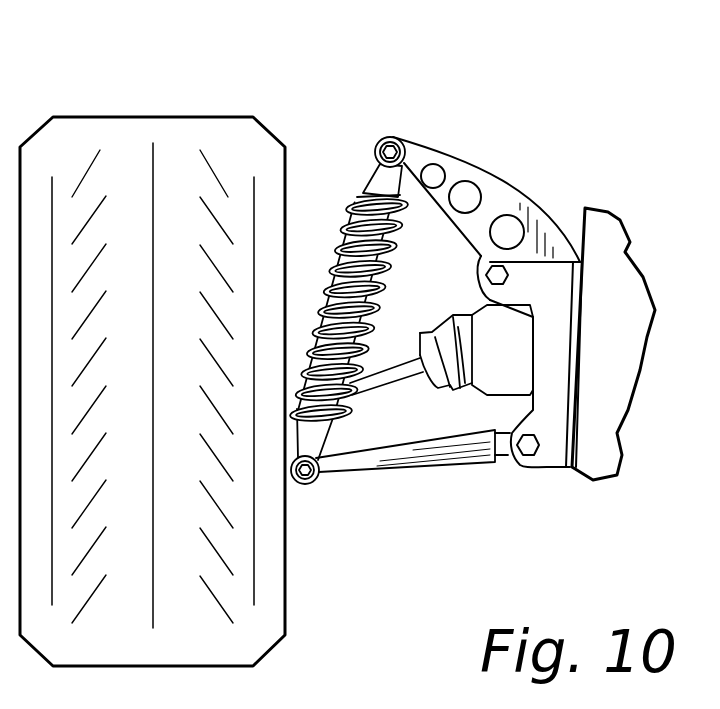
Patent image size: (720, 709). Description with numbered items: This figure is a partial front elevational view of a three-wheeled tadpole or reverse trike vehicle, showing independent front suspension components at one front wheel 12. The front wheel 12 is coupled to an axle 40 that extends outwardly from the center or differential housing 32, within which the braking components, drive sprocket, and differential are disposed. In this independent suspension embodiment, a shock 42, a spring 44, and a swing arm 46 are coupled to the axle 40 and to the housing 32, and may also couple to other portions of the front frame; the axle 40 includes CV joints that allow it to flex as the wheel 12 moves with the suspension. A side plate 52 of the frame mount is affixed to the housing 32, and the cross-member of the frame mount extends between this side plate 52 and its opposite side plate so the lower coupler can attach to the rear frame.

The front wheel 12 is at (172, 132).
The differential housing 32 is at (597, 463).
The axle 40 is at (368, 394).
The shock 42 is at (366, 189).
The spring 44 is at (410, 215).
The swing arm 46 is at (368, 458).
The side plate 52 is at (568, 467).